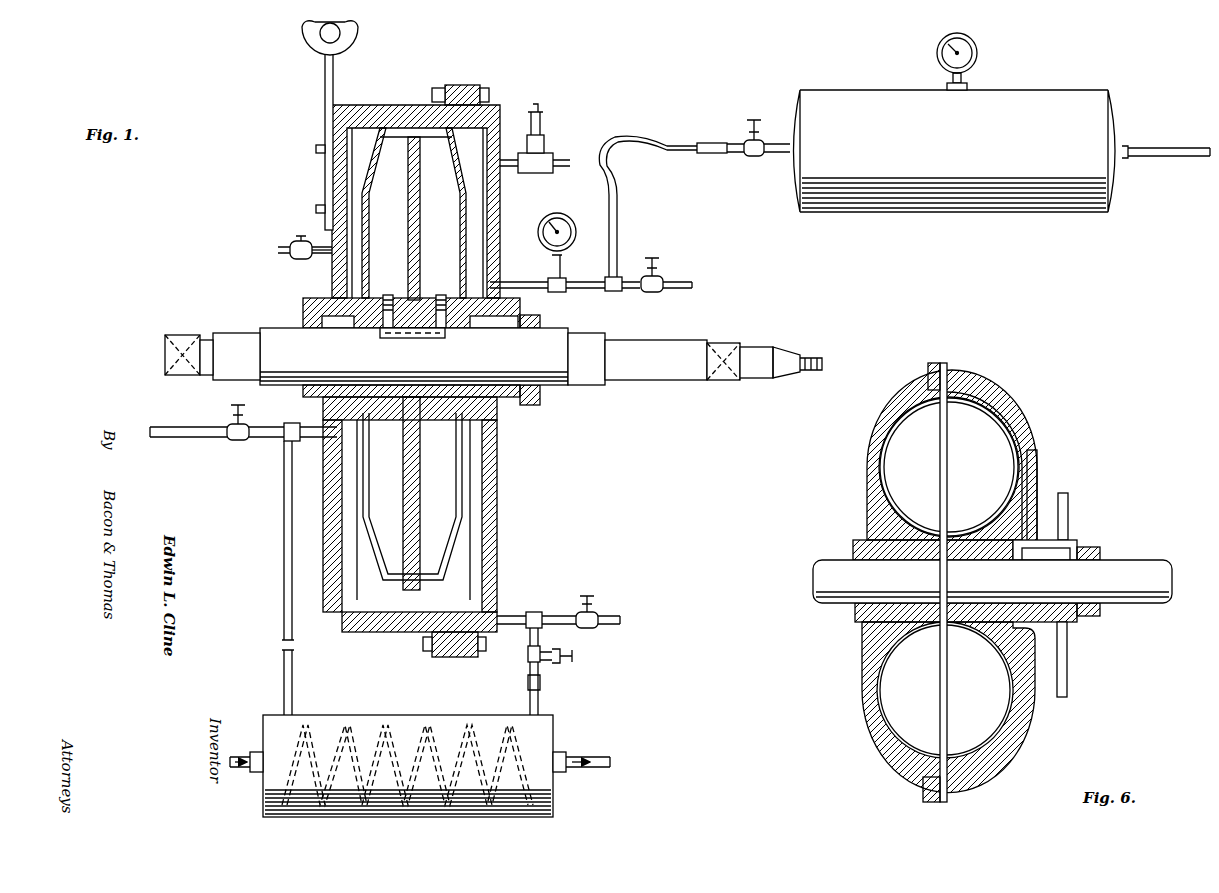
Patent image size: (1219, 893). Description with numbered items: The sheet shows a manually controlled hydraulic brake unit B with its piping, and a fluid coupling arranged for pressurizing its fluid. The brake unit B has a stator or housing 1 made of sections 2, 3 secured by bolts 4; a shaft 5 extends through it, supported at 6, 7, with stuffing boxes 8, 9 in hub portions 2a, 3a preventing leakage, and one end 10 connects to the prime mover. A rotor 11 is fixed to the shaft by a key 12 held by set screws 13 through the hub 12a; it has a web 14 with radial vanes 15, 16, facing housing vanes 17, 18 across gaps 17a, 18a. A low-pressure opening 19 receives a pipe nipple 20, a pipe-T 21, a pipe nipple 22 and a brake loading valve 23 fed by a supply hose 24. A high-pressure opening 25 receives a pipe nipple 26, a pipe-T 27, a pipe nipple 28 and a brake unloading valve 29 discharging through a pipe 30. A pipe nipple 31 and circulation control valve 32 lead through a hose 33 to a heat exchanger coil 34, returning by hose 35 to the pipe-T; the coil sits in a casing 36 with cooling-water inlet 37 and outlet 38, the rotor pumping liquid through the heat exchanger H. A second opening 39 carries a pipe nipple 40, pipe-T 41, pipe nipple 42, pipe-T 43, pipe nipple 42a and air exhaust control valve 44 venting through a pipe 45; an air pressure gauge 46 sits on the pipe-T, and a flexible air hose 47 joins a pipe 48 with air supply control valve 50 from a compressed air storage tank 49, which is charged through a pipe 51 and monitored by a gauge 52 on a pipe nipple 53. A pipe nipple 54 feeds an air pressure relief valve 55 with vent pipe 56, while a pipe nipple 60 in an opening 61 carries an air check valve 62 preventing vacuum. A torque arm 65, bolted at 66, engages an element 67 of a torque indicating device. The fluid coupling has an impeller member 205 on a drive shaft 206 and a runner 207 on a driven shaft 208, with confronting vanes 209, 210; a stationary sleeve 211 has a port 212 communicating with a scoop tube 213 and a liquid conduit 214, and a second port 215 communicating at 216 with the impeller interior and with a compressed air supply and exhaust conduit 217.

In FIG. 1, the stator or housing 1 is at (500, 540).
In FIG. 1, the housing section 2 is at (490, 632).
In FIG. 1, the hub portion 2a is at (490, 420).
In FIG. 1, the housing section 3 is at (338, 612).
In FIG. 1, the hub portion 3a is at (332, 298).
In FIG. 1, the bolts 4 is at (489, 92).
In FIG. 1, the shaft 5 is at (568, 390).
In FIG. 1, the shaft support 6 is at (185, 335).
In FIG. 1, the shaft support 7 is at (724, 385).
In FIG. 1, the stuffing box 8 is at (540, 319).
In FIG. 1, the stuffing box 9 is at (292, 320).
In FIG. 1, the shaft end 10 is at (792, 360).
In FIG. 1, the rotor 11 is at (358, 272).
In FIG. 1, the key 12 is at (432, 338).
In FIG. 1, the rotor hub 12a is at (400, 415).
In FIG. 1, the set screws 13 is at (387, 295).
In FIG. 1, the web 14 is at (416, 512).
In FIG. 1, the radial vanes 15 is at (462, 218).
In FIG. 1, the radial vanes 16 is at (370, 492).
In FIG. 1, the vanes 17 is at (470, 490).
In FIG. 1, the gap 17a is at (462, 530).
In FIG. 1, the vanes 18 is at (352, 535).
In FIG. 1, the gap 18a is at (358, 508).
In FIG. 1, the threaded opening 19 is at (349, 443).
In FIG. 1, the pipe nipple 20 is at (296, 443).
In FIG. 1, the pipe-T 21 is at (292, 425).
In FIG. 1, the pipe nipple 22 is at (272, 428).
In FIG. 1, the brake loading valve 23 is at (238, 442).
In FIG. 1, the flexible hose or supply pipe 24 is at (178, 427).
In FIG. 1, the threaded opening 25 is at (500, 605).
In FIG. 1, the pipe nipple 26 is at (508, 618).
In FIG. 1, the pipe-T 27 is at (528, 626).
In FIG. 1, the pipe nipple 28 is at (558, 614).
In FIG. 1, the brake unloading valve 29 is at (594, 600).
In FIG. 1, the pipe 30 is at (614, 626).
In FIG. 1, the pipe nipple 31 is at (541, 645).
In FIG. 1, the circulation control valve 32 is at (574, 660).
In FIG. 1, the hose 33 is at (540, 698).
In FIG. 1, the heat exchanger coil 34 is at (438, 740).
In FIG. 1, the return hose 35 is at (283, 616).
In FIG. 1, the casing 36 is at (553, 740).
In FIG. 1, the inlet 37 is at (250, 757).
In FIG. 1, the outlet 38 is at (600, 762).
In FIG. 1, the threaded opening 39 is at (497, 282).
In FIG. 1, the pipe nipple 40 is at (527, 282).
In FIG. 1, the pipe-T 41 is at (562, 278).
In FIG. 1, the pipe nipple 42 is at (590, 290).
In FIG. 1, the pipe nipple 42a is at (632, 280).
In FIG. 1, the pipe-T 43 is at (616, 291).
In FIG. 1, the air exhaust control valve 44 is at (654, 262).
In FIG. 1, the pipe 45 is at (690, 285).
In FIG. 1, the air pressure gauge 46 is at (562, 214).
In FIG. 1, the flexible air hose 47 is at (616, 138).
In FIG. 1, the pipe 48 is at (737, 153).
In FIG. 1, the compressed air storage tank 49 is at (980, 200).
In FIG. 1, the air supply control valve 50 is at (755, 118).
In FIG. 1, the pipe 51 is at (1170, 148).
In FIG. 1, the air pressure gauge 52 is at (937, 51).
In FIG. 1, the pipe nipple 53 is at (967, 84).
In FIG. 1, the pipe nipple 54 is at (505, 159).
In FIG. 1, the air pressure relief valve 55 is at (542, 120).
In FIG. 1, the vent pipe 56 is at (563, 160).
In FIG. 1, the pipe nipple 60 is at (328, 246).
In FIG. 1, the opening 61 is at (340, 246).
In FIG. 1, the air check valve 62 is at (292, 244).
In FIG. 1, the torque arm 65 is at (325, 94).
In FIG. 1, the bolts 66 is at (316, 150).
In FIG. 1, the torque indicating element 67 is at (322, 33).
In FIG. 1, the hydraulic brake unit B is at (388, 103).
In FIG. 1, the heat exchanger H is at (367, 715).
In FIG. 6, the impeller member 205 is at (867, 488).
In FIG. 6, the drive shaft 206 is at (820, 578).
In FIG. 6, the runner 207 is at (1010, 400).
In FIG. 6, the driven shaft 208 is at (1155, 572).
In FIG. 6, the impeller vanes 209 is at (922, 412).
In FIG. 6, the runner vanes 210 is at (970, 410).
In FIG. 6, the stationary sleeve 211 is at (1065, 538).
In FIG. 6, the port 212 is at (1090, 548).
In FIG. 6, the tube 213 is at (1036, 445).
In FIG. 6, the conduit 214 is at (1068, 498).
In FIG. 6, the port 215 is at (1082, 616).
In FIG. 6, the communication point 216 is at (1028, 622).
In FIG. 6, the compressed air supply and exhaust conduit 217 is at (1067, 686).